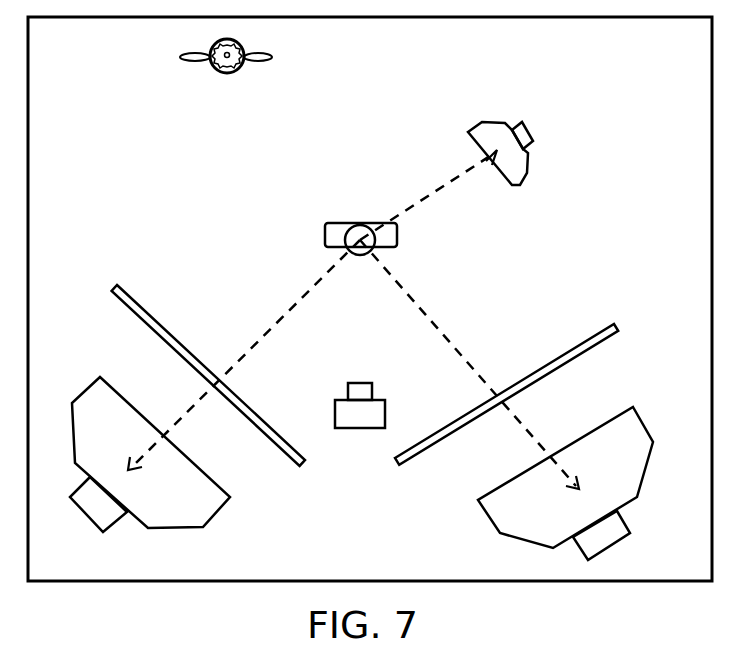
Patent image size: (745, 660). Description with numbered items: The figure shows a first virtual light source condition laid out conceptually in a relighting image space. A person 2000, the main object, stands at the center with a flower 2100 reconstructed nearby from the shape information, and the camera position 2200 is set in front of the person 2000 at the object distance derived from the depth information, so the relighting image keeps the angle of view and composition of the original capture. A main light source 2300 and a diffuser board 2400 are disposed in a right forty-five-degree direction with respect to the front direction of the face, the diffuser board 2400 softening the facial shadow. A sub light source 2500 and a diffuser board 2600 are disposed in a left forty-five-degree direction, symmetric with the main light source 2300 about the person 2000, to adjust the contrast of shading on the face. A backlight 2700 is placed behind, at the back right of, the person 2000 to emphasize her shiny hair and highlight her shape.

The flower 2100 is at (268, 53).
The backlight 2700 is at (505, 123).
The person 2000 is at (398, 238).
The sub light source 2500 is at (100, 377).
The diffuser board 2600 is at (260, 433).
The camera position 2200 is at (362, 428).
The diffuser board 2400 is at (427, 448).
The main light source 2300 is at (633, 407).